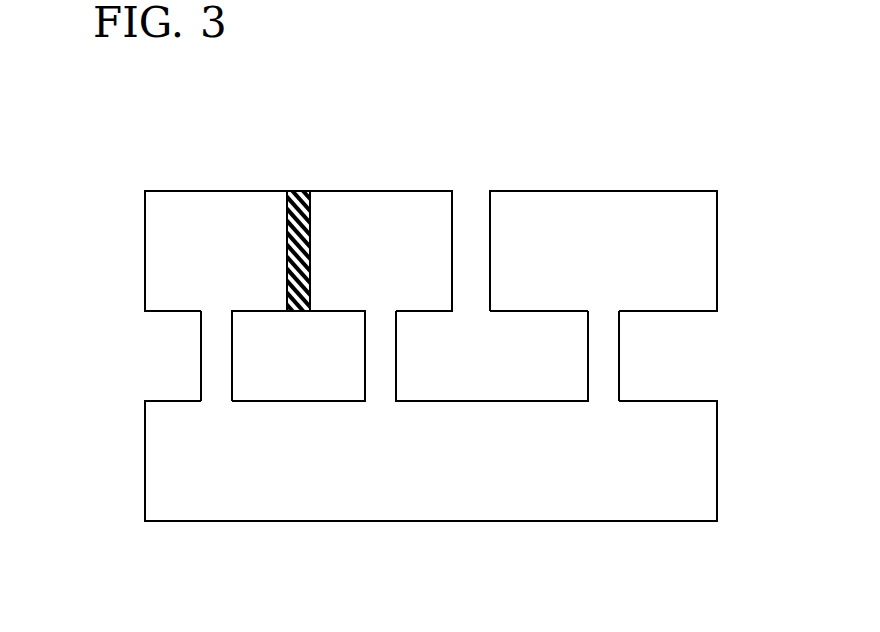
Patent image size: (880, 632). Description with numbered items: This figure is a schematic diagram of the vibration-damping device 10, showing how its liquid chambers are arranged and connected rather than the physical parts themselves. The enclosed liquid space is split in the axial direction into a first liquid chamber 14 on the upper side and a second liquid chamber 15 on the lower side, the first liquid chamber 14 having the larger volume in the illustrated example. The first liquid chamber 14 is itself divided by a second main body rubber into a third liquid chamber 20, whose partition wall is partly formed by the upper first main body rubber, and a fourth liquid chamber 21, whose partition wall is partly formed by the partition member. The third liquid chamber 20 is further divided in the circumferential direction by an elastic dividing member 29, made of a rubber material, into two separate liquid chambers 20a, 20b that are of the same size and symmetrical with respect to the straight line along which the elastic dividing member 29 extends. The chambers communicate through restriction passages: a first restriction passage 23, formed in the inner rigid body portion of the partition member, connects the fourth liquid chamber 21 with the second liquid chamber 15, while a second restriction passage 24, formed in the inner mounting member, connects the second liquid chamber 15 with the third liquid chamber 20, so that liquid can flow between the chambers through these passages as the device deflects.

The vibration-damping device 10 is at (663, 111).
The first liquid chamber 14 is at (557, 56).
The second liquid chamber 15 is at (338, 498).
The third liquid chamber 20 is at (415, 191).
The separate liquid chamber 20a is at (207, 215).
The separate liquid chamber 20b is at (370, 215).
The fourth liquid chamber 21 is at (537, 191).
The first restriction passage 23 is at (600, 355).
The second restriction passage 24 is at (216, 355).
The elastic dividing member 29 is at (286, 221).